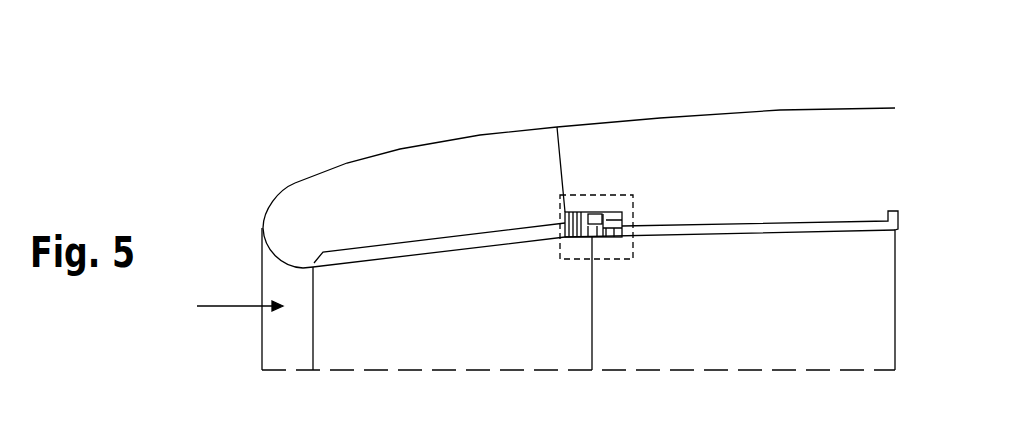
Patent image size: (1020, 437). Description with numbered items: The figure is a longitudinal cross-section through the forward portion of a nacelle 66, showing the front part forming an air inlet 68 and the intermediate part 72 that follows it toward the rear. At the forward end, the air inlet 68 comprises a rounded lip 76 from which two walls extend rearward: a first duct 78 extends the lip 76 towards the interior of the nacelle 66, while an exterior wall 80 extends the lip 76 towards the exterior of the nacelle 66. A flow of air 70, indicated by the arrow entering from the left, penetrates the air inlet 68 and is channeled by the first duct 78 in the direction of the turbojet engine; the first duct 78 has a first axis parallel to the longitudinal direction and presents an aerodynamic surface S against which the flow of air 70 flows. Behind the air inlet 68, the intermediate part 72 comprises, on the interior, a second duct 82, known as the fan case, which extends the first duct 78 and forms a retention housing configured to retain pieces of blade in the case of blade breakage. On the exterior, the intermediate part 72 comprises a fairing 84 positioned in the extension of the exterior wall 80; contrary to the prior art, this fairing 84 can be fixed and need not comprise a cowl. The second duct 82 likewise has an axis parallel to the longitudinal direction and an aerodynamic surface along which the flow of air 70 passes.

The nacelle 66 is at (290, 107).
The air inlet 68 is at (230, 133).
The flow of air 70 is at (228, 308).
The intermediate part 72 is at (560, 115).
The lip 76 is at (267, 208).
The first duct 78 is at (423, 255).
The exterior wall 80 is at (343, 163).
The second duct 82 is at (783, 237).
The fairing 84 is at (805, 108).
The aerodynamic surface S is at (505, 245).